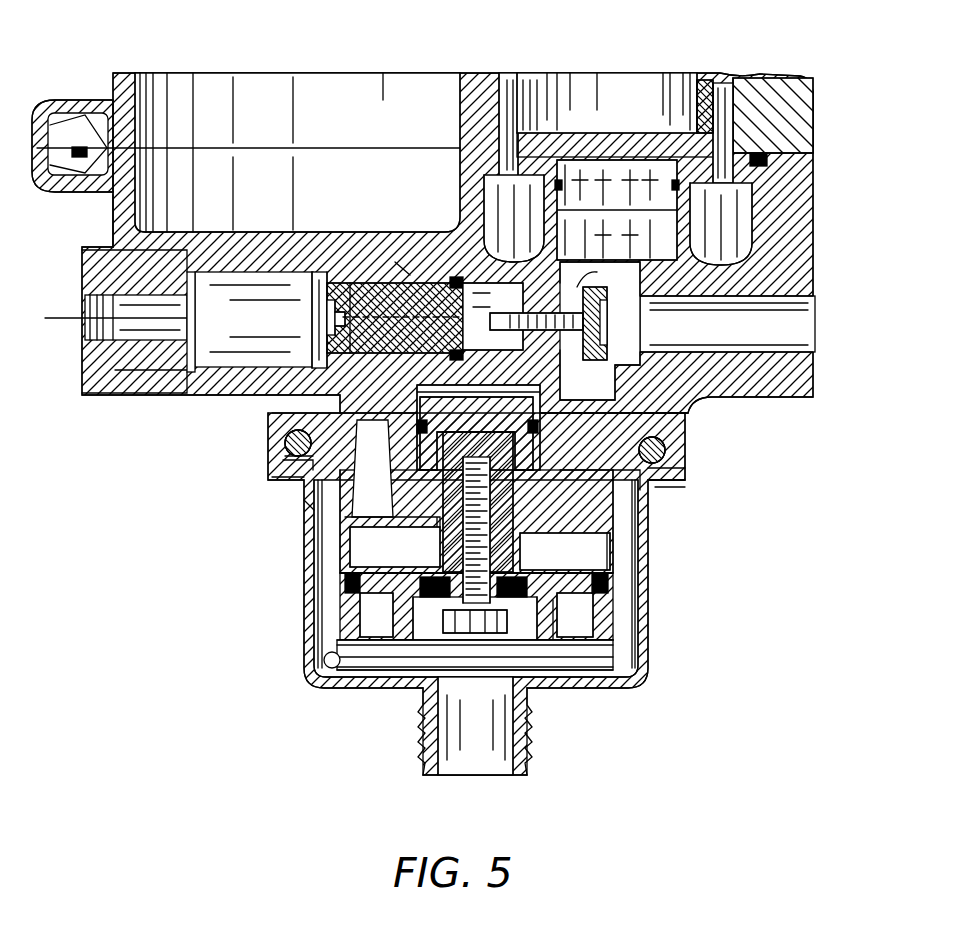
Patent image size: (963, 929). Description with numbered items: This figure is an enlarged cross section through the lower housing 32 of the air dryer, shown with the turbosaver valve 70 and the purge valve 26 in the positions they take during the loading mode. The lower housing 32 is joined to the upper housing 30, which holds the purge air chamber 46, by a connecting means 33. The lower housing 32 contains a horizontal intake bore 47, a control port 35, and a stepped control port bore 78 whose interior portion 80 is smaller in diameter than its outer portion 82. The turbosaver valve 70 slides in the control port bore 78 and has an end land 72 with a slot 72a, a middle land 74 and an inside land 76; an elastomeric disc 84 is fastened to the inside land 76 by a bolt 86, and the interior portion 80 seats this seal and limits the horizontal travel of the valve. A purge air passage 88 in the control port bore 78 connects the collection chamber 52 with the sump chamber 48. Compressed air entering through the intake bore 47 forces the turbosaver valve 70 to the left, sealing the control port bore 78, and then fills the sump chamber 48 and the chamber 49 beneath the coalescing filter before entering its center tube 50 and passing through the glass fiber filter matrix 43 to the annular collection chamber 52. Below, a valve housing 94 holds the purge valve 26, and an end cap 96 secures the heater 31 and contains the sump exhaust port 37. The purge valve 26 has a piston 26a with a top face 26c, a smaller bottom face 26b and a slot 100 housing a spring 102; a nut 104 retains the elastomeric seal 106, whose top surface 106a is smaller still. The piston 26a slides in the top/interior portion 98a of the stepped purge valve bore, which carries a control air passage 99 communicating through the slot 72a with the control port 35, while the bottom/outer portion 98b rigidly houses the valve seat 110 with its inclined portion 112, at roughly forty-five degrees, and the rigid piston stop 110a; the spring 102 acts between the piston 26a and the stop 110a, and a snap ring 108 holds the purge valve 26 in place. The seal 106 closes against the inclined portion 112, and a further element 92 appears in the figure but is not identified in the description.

The upper housing 30 is at (125, 70).
The purge air chamber 46 is at (222, 92).
The connecting means 33 is at (55, 112).
The lower housing 32 is at (113, 228).
The outer portion 82 is at (82, 278).
The control port 35 is at (82, 318).
The control port bore 78 is at (240, 337).
The end land 72 is at (320, 253).
The slot 72a is at (350, 262).
The middle land 74 is at (400, 262).
The turbosaver valve 70 is at (406, 318).
The interior portion 80 is at (533, 228).
The purge air passage 88 is at (530, 250).
The center tube 50 is at (630, 143).
The glass fiber filter matrix 43 is at (710, 100).
The chamber 49 is at (735, 202).
The collection chamber 52 is at (640, 237).
The intake bore 47 is at (780, 327).
The elastomeric disc 84 is at (600, 331).
The bolt 86 is at (608, 320).
The inside land 76 is at (617, 277).
The control air passage 99 is at (417, 390).
The cap 92 is at (430, 410).
The valve housing 94 is at (305, 518).
The end cap 96 is at (318, 540).
The rigid piston stop 110a is at (330, 520).
The heater 31 is at (283, 450).
The piston 26a is at (665, 445).
The top face 26c is at (688, 415).
The spring 102 is at (657, 485).
The slot 100 is at (637, 490).
The top/interior portion 98a is at (563, 503).
The bottom/outer portion 98b is at (607, 607).
The purge valve 26 is at (440, 549).
The bottom face 26b is at (615, 556).
The sump chamber 48 is at (607, 550).
The nut 104 is at (470, 600).
The elastomeric seal 106 is at (440, 590).
The top surface 106a is at (557, 605).
The valve seat 110 is at (345, 575).
The inclined portion 112 is at (357, 593).
The snap ring 108 is at (324, 660).
The sump exhaust port 37 is at (485, 767).